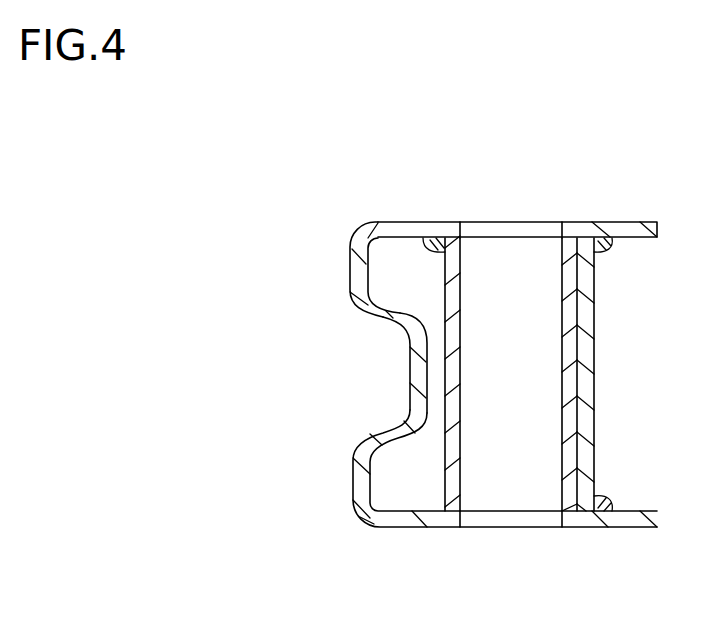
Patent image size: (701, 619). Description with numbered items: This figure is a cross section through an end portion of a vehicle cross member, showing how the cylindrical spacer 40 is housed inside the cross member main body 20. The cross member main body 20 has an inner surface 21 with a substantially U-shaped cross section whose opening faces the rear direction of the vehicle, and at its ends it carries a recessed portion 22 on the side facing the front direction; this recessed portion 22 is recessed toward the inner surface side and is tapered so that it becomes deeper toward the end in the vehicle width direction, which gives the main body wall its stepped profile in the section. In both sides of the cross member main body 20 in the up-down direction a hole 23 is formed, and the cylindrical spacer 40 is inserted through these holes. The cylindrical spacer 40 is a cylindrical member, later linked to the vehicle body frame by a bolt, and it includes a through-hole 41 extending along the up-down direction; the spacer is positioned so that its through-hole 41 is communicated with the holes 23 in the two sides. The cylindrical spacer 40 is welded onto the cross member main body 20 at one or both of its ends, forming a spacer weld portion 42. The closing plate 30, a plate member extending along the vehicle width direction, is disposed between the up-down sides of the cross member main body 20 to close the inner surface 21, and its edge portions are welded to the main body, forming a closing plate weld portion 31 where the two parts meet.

The cross member main body 20 is at (352, 272).
The inner surface 21 is at (372, 488).
The recessed portion 22 is at (412, 366).
The hole 23 is at (463, 224).
The closing plate 30 is at (590, 337).
The closing plate weld portion 31 is at (610, 252).
The cylindrical spacer 40 is at (572, 386).
The through-hole 41 is at (530, 255).
The spacer weld portion 42 is at (428, 240).